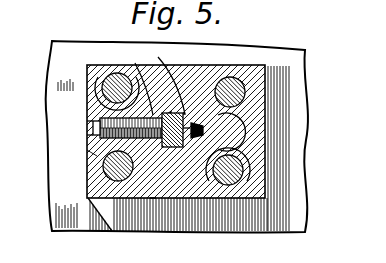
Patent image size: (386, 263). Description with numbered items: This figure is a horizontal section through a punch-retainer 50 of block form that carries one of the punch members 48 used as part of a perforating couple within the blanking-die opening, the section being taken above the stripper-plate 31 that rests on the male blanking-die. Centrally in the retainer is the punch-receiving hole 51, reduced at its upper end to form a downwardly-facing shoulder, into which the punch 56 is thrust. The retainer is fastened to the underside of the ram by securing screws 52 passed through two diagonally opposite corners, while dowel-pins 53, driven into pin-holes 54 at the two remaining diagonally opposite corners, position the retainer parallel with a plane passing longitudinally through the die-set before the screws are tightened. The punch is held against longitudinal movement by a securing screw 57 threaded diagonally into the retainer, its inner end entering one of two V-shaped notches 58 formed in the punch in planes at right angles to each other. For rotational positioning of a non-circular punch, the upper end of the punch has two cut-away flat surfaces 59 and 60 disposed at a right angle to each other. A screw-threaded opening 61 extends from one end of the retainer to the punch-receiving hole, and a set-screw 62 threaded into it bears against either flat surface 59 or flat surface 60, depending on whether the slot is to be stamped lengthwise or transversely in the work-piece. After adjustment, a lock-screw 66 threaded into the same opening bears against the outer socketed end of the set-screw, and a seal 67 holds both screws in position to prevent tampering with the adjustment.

The stripper-plate 31 is at (85, 226).
The punch member 48 is at (97, 153).
The block 50 is at (190, 66).
The punch-receiving hole 51 is at (153, 197).
The securing screw 52 is at (108, 82).
The dowel-pin 53 is at (271, 77).
The pin-hole 54 is at (103, 170).
The punch 56 is at (186, 147).
The securing screw 57 is at (200, 137).
The V-shaped notch 58 is at (161, 80).
The cut-away flat surface 59 is at (172, 147).
The cut-away flat surface 60 is at (145, 110).
The screw-threaded opening 61 is at (100, 119).
The set-screw 62 is at (133, 64).
The lock-screw 66 is at (96, 129).
The seal 67 is at (87, 125).